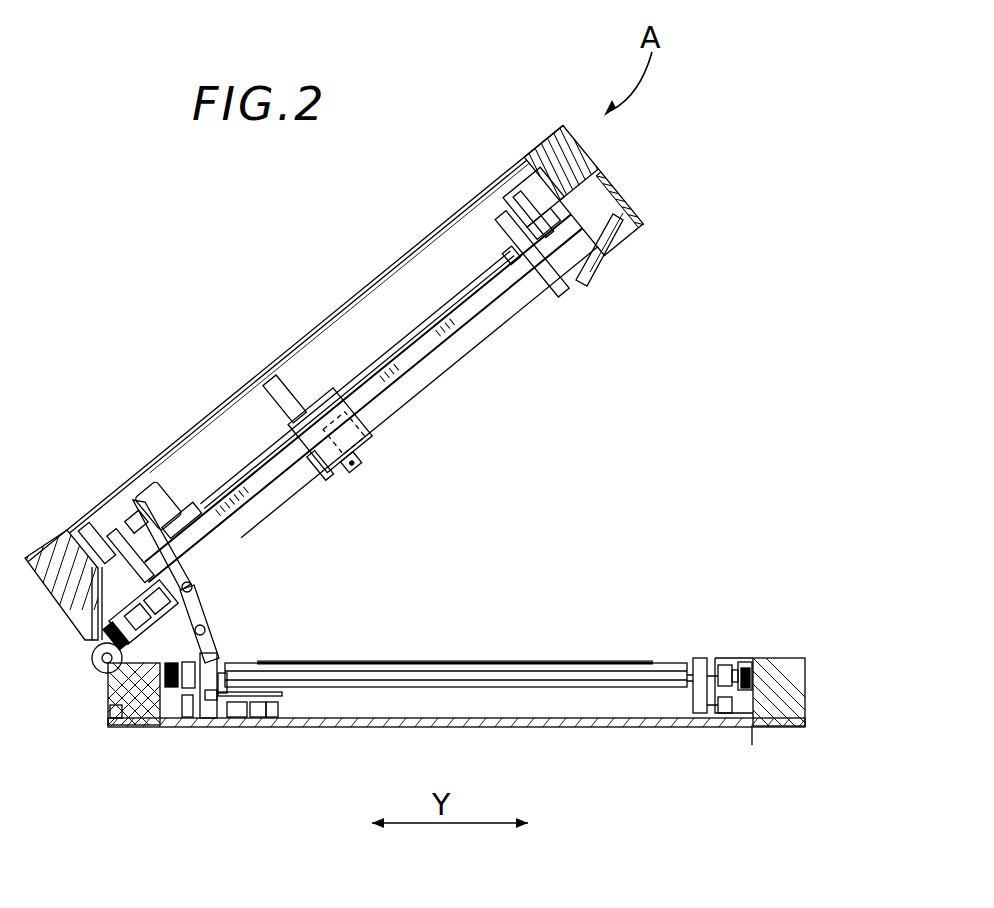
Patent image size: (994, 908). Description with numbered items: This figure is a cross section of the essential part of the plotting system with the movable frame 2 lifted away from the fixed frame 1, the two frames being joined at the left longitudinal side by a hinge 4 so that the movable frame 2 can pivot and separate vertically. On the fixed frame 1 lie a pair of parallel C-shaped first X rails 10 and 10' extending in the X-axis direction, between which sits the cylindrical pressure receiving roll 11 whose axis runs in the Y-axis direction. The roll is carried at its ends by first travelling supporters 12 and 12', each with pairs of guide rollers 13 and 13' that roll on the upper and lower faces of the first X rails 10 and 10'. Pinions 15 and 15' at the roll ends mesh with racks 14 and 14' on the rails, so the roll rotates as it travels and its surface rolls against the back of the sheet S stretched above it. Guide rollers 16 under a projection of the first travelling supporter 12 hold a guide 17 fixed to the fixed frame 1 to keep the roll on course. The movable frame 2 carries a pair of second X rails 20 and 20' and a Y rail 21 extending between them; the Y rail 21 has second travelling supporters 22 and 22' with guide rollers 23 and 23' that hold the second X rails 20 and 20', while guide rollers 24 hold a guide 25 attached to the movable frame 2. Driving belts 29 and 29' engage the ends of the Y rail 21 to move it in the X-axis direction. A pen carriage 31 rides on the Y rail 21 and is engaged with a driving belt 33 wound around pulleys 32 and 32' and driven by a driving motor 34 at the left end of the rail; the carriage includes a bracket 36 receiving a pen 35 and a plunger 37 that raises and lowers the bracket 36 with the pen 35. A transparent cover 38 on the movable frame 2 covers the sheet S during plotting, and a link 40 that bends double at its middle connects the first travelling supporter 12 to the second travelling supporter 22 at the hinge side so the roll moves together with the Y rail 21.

The fixed frame 1 is at (780, 727).
The movable frame 2 is at (593, 157).
The hinge 4 is at (100, 663).
The first X rail 10 is at (135, 709).
The first X rail 10' is at (760, 753).
The pressure receiving roll 11 is at (635, 667).
The first travelling supporter 12 is at (270, 655).
The first travelling supporter 12' is at (667, 716).
The guide rollers 13 is at (139, 739).
The guide rollers 13' is at (730, 686).
The rack 14 is at (229, 666).
The rack 14' is at (778, 642).
The pinion 15 is at (125, 700).
The pinion 15' is at (797, 691).
The guide rollers 16 is at (232, 718).
The guide 17 is at (263, 718).
The second X rail 20 is at (86, 546).
The second X rail 20' is at (521, 205).
The Y rail 21 is at (347, 300).
The second travelling supporter 22 is at (359, 398).
The second travelling supporter 22' is at (493, 203).
The guide rollers 23 is at (141, 492).
The guide rollers 23' is at (493, 185).
The guide rollers 24 is at (203, 593).
The guide 25 is at (85, 597).
The driving belt 29 is at (78, 644).
The driving belt 29' is at (638, 251).
The pen carriage 31 is at (315, 397).
The pulley 32 is at (334, 427).
The pulley 32' is at (419, 392).
The driving belt 33 is at (450, 310).
The driving motor 34 is at (163, 483).
The pen 35 is at (270, 375).
The bracket 36 is at (313, 457).
The plunger 37 is at (375, 433).
The transparent cover 38 is at (372, 283).
The link 40 is at (210, 613).
The sheet S is at (550, 660).